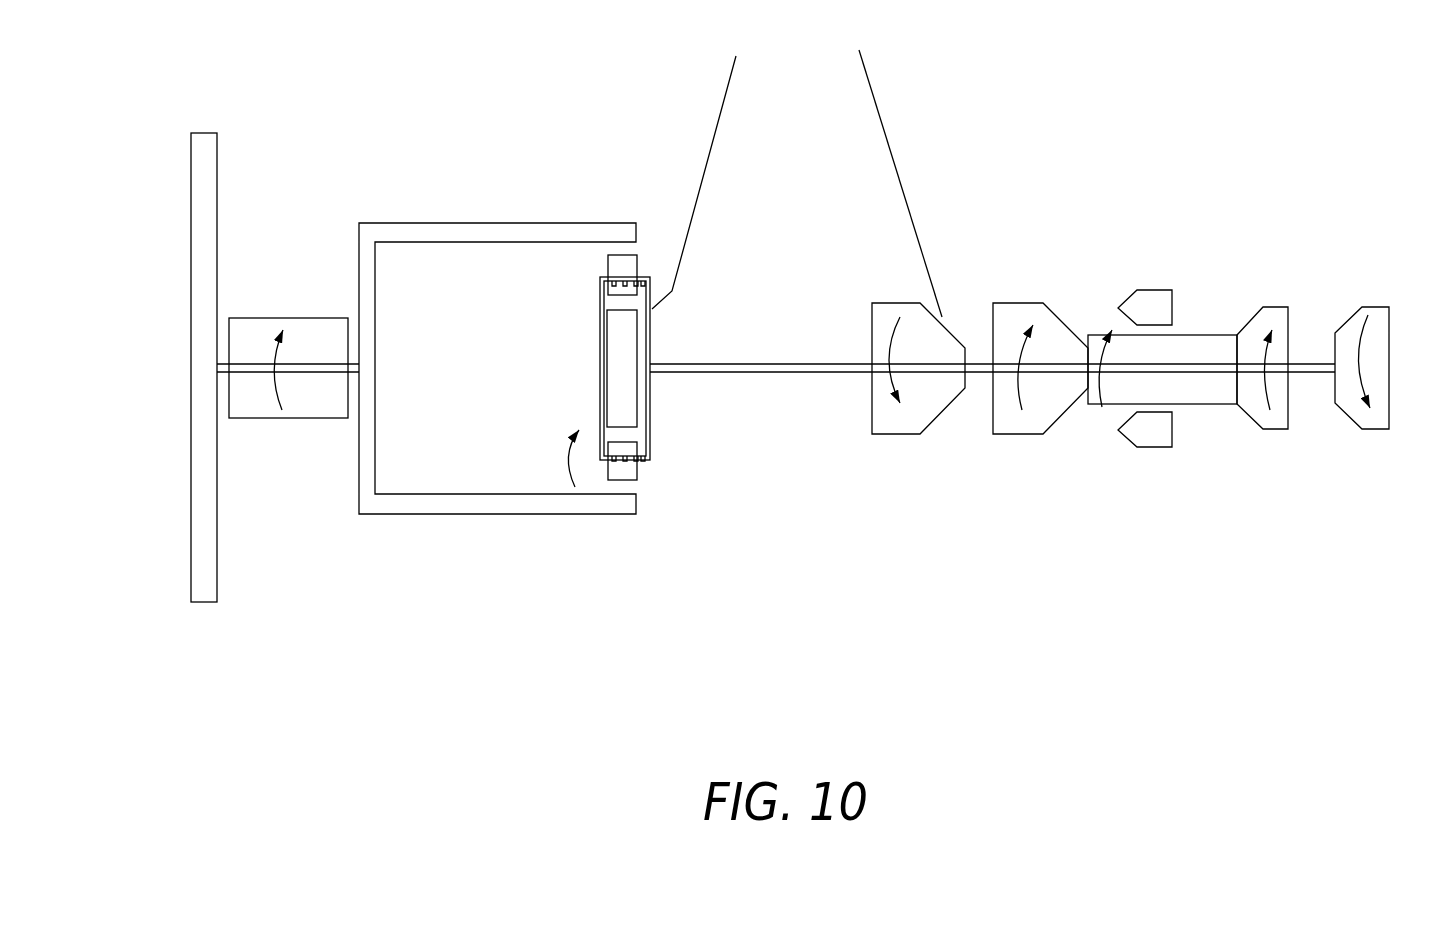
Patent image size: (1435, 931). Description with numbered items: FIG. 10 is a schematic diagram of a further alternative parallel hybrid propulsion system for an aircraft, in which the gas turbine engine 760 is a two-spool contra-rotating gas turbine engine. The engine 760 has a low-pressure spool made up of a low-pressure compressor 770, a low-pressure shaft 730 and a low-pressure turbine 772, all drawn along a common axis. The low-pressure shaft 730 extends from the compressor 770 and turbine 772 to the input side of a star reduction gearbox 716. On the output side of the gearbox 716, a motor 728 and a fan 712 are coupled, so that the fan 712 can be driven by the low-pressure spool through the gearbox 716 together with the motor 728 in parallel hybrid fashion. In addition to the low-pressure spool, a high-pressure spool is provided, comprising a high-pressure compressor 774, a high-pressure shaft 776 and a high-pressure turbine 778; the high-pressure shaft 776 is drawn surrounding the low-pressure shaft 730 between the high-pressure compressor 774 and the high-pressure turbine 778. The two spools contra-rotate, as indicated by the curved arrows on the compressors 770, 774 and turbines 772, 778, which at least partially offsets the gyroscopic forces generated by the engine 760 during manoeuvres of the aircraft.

The fan 712 is at (190, 177).
The star reduction gearbox 716 is at (613, 530).
The motor 728 is at (305, 318).
The low-pressure shaft 730 is at (705, 363).
The gas turbine engine 760 is at (1158, 457).
The low-pressure compressor 770 is at (893, 437).
The low-pressure turbine 772 is at (1375, 307).
The high-pressure compressor 774 is at (1015, 437).
The high-pressure shaft 776 is at (1205, 333).
The high-pressure turbine 778 is at (1278, 307).